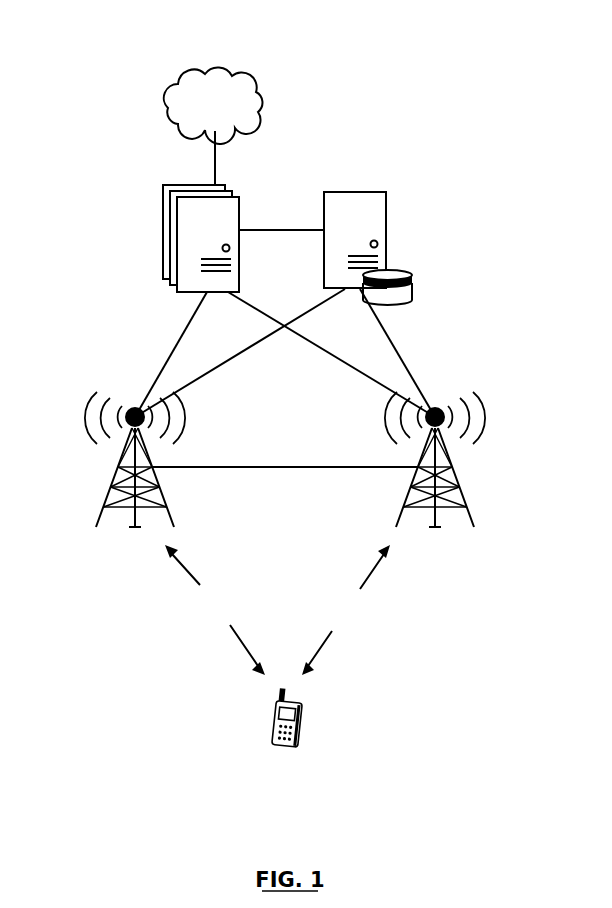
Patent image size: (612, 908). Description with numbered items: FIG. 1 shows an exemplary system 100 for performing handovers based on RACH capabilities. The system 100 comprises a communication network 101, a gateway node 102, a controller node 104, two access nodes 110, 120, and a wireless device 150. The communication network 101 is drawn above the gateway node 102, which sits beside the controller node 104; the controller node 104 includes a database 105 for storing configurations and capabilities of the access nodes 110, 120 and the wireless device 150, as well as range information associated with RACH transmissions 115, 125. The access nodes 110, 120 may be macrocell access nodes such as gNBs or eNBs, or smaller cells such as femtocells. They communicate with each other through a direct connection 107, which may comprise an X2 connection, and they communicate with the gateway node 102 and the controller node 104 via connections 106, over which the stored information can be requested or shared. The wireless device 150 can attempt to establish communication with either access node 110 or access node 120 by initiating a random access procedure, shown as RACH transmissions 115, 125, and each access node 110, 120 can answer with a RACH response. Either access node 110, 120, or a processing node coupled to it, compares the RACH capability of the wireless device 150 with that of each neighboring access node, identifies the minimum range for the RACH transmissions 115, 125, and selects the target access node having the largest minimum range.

The system 100 is at (396, 55).
The communication network 101 is at (200, 110).
The gateway node 102 is at (182, 185).
The controller node 104 is at (386, 192).
The database 105 is at (412, 275).
The connections 106 is at (184, 333).
The direct connection 107 is at (313, 467).
The access node 110 is at (105, 505).
The RACH transmission 115 is at (240, 643).
The access node 120 is at (463, 503).
The RACH transmission 125 is at (327, 643).
The wireless device 150 is at (272, 732).